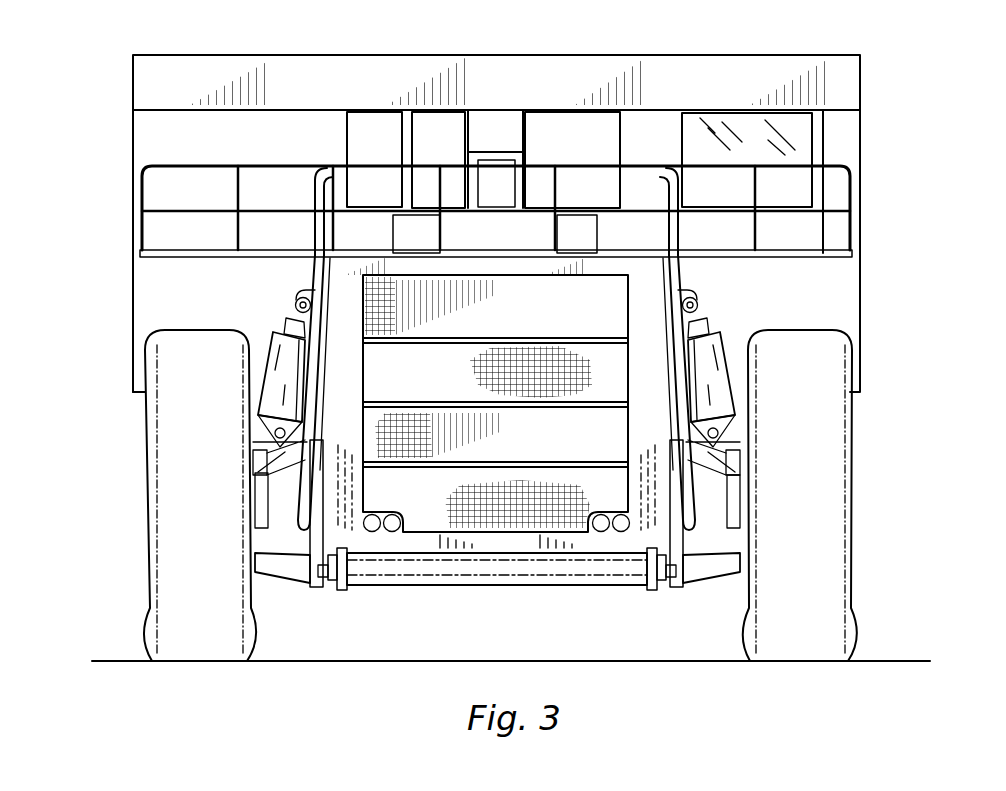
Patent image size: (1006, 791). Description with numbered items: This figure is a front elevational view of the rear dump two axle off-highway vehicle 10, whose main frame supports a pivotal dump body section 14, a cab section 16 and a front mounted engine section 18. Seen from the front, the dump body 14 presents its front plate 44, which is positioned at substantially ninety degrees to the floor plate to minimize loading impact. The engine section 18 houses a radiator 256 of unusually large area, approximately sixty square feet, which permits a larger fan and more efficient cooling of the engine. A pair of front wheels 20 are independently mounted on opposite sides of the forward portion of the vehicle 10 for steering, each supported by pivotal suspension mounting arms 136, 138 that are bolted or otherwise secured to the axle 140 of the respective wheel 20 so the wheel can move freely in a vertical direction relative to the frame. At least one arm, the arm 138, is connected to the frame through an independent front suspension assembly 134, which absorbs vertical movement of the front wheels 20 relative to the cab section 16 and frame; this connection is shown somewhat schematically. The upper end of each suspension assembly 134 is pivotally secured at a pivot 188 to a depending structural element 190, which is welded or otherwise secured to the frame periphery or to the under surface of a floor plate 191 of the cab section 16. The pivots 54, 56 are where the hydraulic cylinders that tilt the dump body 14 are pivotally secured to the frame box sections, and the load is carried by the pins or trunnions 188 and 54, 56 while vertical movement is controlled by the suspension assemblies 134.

The rear dump two axle off-highway vehicle 10 is at (124, 296).
The dump body section 14 is at (731, 70).
The cab section 16 is at (803, 139).
The front mounted engine section 18 is at (561, 516).
The front wheels 20 is at (222, 648).
The front plate 44 is at (172, 150).
The pivot 54 is at (722, 431).
The pivot 56 is at (273, 433).
The front suspension assembly 134 is at (294, 355).
The suspension mounting arm 136 is at (275, 565).
The suspension mounting arm 138 is at (283, 453).
The axle 140 is at (262, 493).
The pivot 188 is at (296, 306).
The depending structural element 190 is at (306, 294).
The floor plate 191 is at (857, 258).
The radiator 256 is at (588, 320).